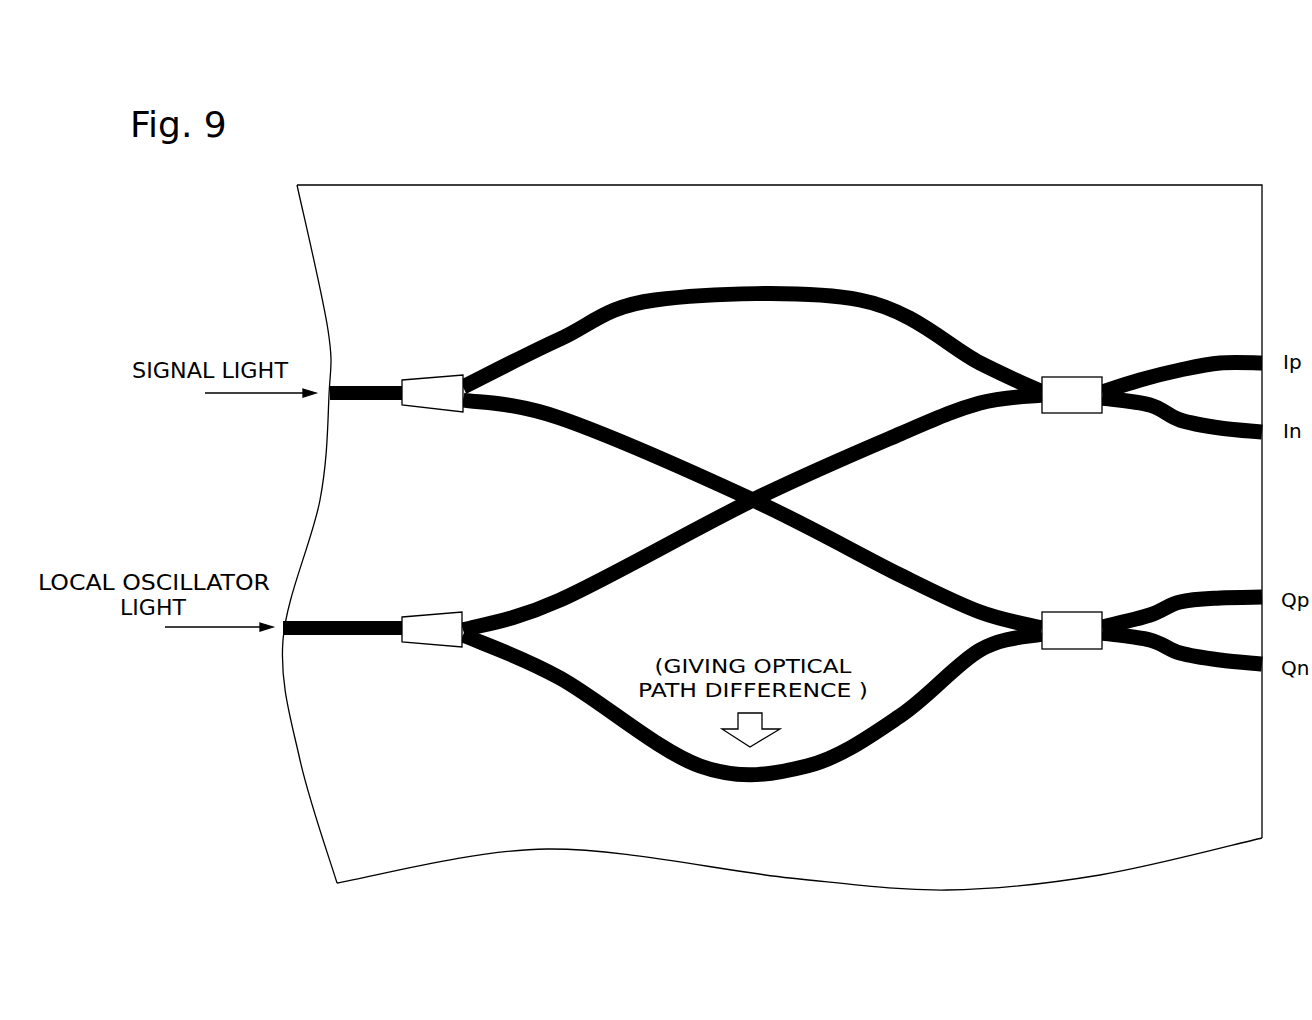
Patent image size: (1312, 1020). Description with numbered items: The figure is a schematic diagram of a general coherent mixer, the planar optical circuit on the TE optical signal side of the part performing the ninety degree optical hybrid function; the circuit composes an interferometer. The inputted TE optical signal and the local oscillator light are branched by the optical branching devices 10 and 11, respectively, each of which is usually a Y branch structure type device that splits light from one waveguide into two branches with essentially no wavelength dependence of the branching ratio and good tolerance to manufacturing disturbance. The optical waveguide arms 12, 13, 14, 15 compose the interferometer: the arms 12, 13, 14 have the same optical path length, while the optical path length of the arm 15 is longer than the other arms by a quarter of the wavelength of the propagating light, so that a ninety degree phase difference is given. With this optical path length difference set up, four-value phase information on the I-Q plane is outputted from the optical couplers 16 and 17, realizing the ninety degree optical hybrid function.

The optical branching device 10 is at (430, 379).
The optical branching device 11 is at (430, 615).
The optical waveguide arm 12 is at (789, 290).
The optical waveguide arm 13 is at (626, 430).
The optical waveguide arm 14 is at (600, 567).
The optical waveguide arm 15 is at (767, 775).
The optical coupler 16 is at (1075, 376).
The optical coupler 17 is at (1075, 611).